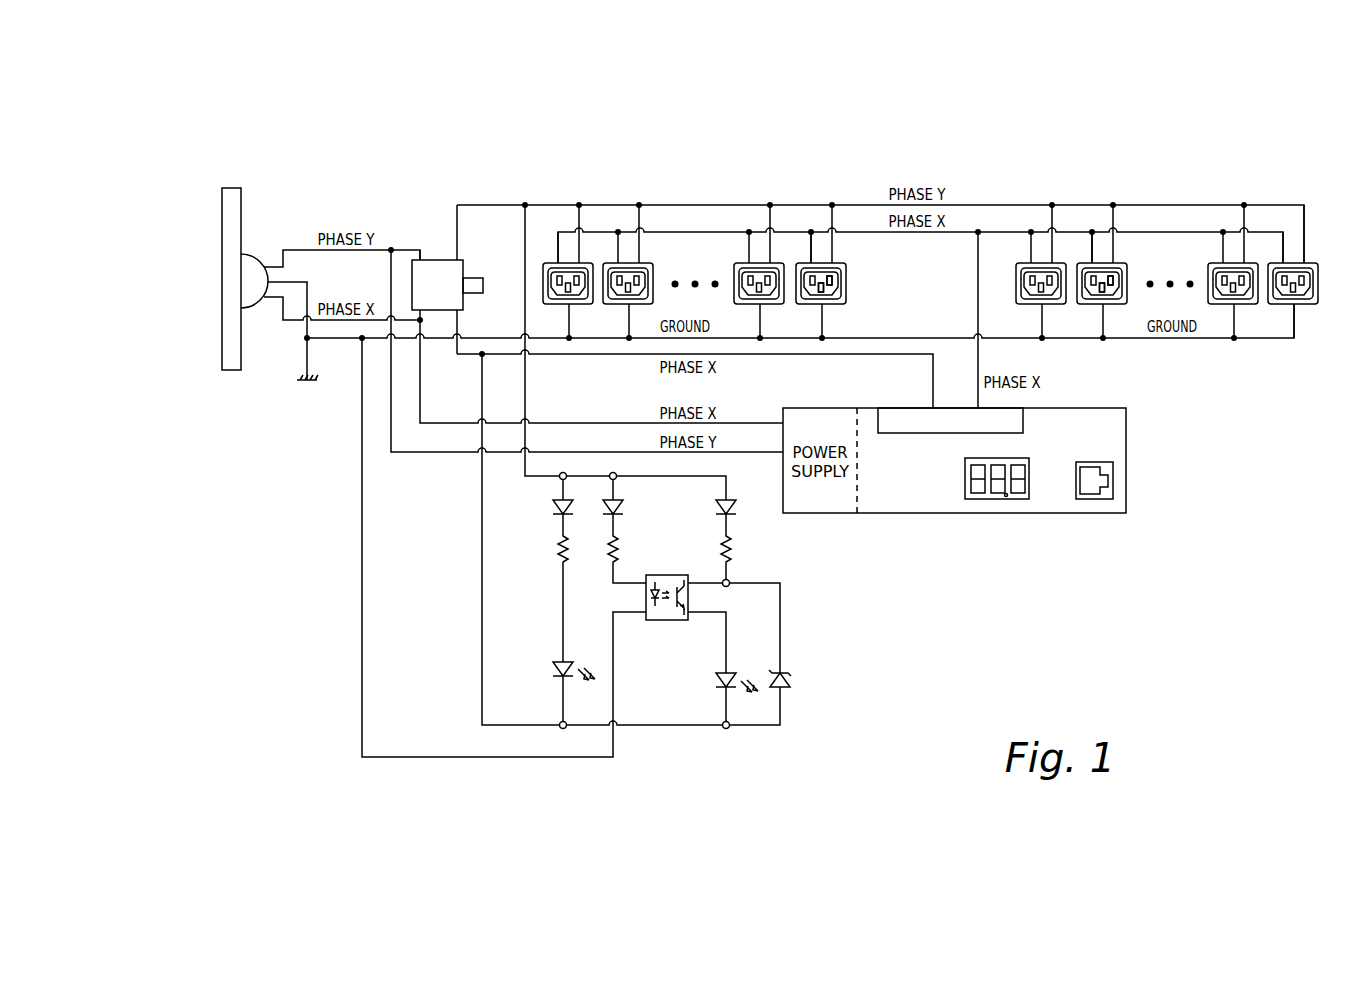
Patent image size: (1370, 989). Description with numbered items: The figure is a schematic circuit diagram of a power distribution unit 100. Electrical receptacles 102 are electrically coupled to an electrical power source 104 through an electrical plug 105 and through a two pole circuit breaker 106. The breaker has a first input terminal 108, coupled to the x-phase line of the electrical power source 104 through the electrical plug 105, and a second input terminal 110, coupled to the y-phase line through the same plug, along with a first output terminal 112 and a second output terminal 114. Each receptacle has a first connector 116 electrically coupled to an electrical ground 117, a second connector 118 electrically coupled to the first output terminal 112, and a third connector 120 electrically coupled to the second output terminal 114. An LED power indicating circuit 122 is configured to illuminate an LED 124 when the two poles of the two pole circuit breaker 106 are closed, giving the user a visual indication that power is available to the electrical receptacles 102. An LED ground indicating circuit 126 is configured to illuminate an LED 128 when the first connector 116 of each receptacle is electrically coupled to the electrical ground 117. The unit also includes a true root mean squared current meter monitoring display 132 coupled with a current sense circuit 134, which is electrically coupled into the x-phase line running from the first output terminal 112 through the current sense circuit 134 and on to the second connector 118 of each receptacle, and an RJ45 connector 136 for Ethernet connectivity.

The power distribution unit 100 is at (433, 61).
The electrical receptacles 102 is at (847, 288).
The electrical power source 104 is at (232, 188).
The electrical plug 105 is at (256, 258).
The two pole circuit breaker 106 is at (447, 285).
The first input terminal 108 is at (430, 312).
The second input terminal 110 is at (430, 260).
The first output terminal 112 is at (463, 305).
The second output terminal 114 is at (460, 259).
The first connector 116 is at (823, 291).
The electrical ground 117 is at (293, 381).
The second connector 118 is at (798, 263).
The third connector 120 is at (833, 281).
The LED power indicating circuit 122 is at (543, 601).
The LED (LD3) 124 is at (541, 634).
The LED ground indicating circuit 126 is at (717, 631).
The LED (LD2) 128 is at (729, 672).
The true RMS current meter monitoring display 132 is at (990, 500).
The current sense circuit 134 is at (898, 408).
The RJ45 connector 136 is at (1103, 500).